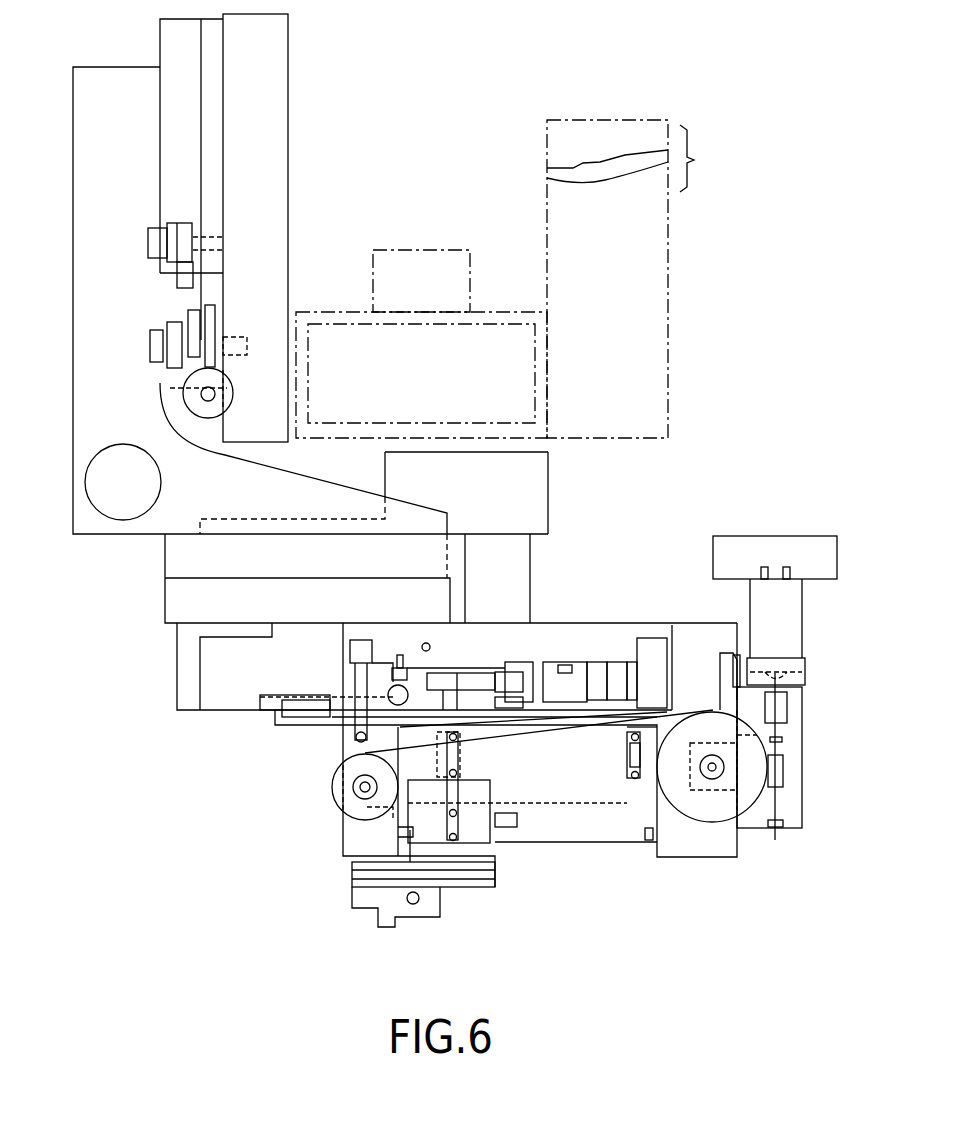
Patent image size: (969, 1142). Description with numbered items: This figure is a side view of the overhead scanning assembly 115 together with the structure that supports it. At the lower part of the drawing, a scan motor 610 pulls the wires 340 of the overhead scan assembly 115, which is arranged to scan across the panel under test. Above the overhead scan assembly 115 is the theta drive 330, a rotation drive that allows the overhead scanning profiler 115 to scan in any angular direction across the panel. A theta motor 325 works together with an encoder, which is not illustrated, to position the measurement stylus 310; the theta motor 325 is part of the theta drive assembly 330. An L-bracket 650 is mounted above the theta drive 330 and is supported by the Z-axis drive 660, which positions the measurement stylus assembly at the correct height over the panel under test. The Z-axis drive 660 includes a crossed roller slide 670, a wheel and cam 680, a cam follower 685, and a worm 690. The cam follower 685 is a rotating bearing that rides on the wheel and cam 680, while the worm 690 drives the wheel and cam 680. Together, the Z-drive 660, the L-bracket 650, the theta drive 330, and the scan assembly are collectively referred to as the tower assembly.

The Z-axis drive 660 is at (289, 90).
The crossed roller slide 670 is at (193, 181).
The cam follower 685 is at (172, 244).
The wheel and cam 680 is at (178, 302).
The worm 690 is at (188, 395).
The L-bracket 650 is at (72, 481).
The theta drive 330 is at (163, 596).
The theta motor 325 is at (515, 580).
The wires 340 is at (500, 738).
The scan motor 610 is at (790, 592).
The measurement stylus 310 is at (378, 927).
The overhead scanning assembly 115 is at (645, 939).